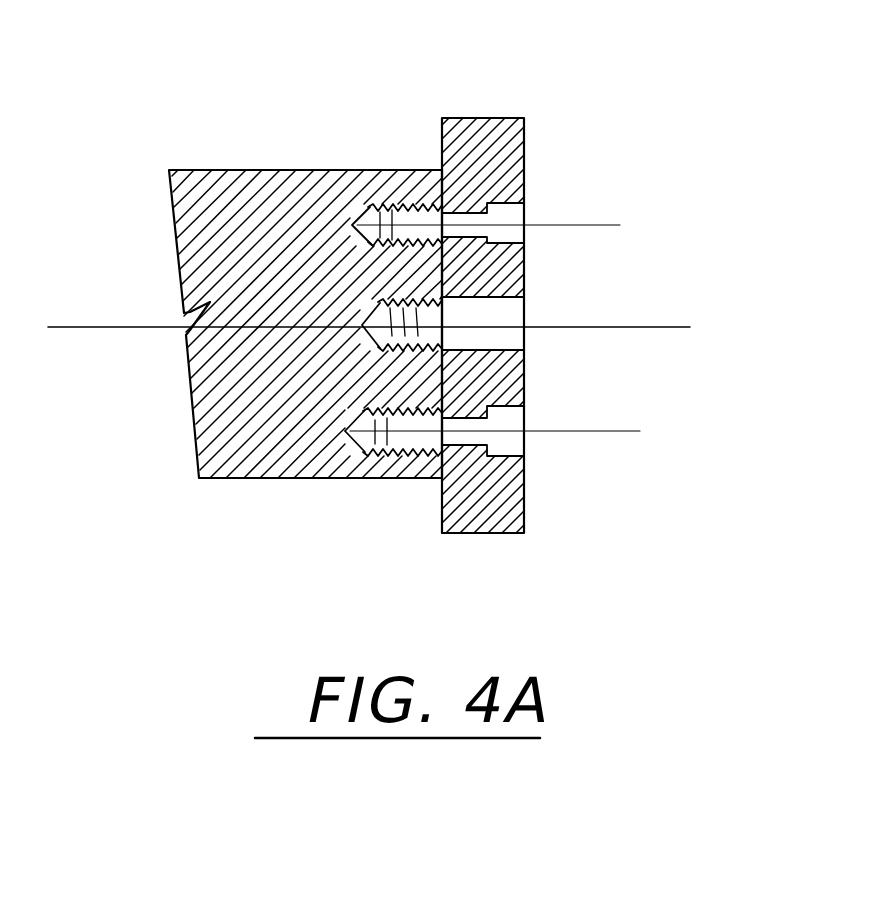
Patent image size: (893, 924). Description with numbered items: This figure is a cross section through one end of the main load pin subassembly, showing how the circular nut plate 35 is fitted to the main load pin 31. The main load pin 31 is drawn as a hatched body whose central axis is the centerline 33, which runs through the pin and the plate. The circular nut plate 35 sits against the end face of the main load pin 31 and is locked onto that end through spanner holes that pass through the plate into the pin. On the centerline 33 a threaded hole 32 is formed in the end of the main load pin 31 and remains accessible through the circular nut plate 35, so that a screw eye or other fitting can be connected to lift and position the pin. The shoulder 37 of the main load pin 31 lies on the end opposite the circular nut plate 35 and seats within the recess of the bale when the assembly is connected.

The main load pin 31 is at (262, 170).
The threaded hole 32 is at (525, 318).
The centerline 33 is at (650, 330).
The circular nut plate 35 is at (525, 150).
The shoulder 37 is at (433, 494).